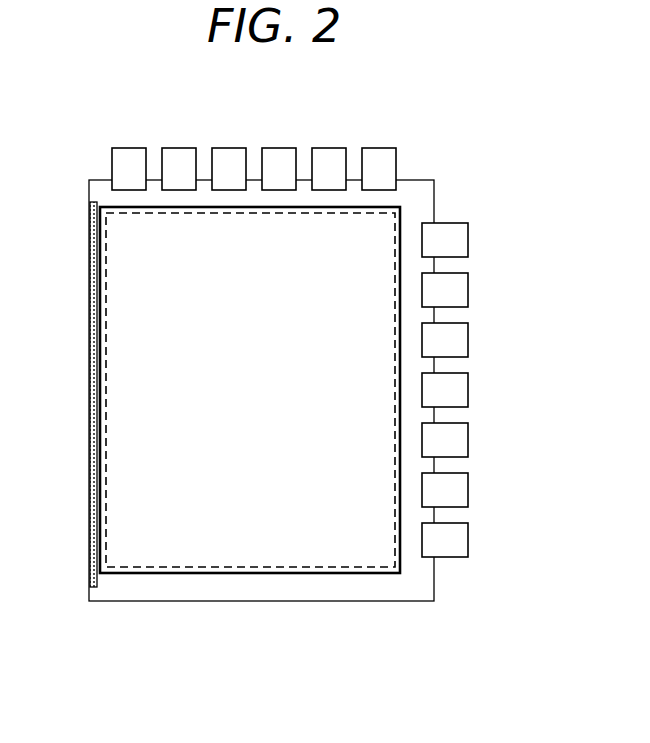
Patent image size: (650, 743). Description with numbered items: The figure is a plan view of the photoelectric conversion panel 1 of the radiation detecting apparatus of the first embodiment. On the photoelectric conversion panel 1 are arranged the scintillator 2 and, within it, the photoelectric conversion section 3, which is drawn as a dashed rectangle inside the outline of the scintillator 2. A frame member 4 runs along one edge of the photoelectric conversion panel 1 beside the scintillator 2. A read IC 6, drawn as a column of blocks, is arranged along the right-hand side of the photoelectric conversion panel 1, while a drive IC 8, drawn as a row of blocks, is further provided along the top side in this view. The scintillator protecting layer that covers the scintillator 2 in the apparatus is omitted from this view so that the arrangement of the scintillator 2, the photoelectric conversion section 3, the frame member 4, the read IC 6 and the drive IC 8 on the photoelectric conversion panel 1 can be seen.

The photoelectric conversion panel 1 is at (343, 592).
The scintillator 2 is at (243, 573).
The photoelectric conversion section 3 is at (162, 567).
The frame member 4 is at (90, 488).
The read IC 6 is at (486, 223).
The drive IC 8 is at (395, 133).